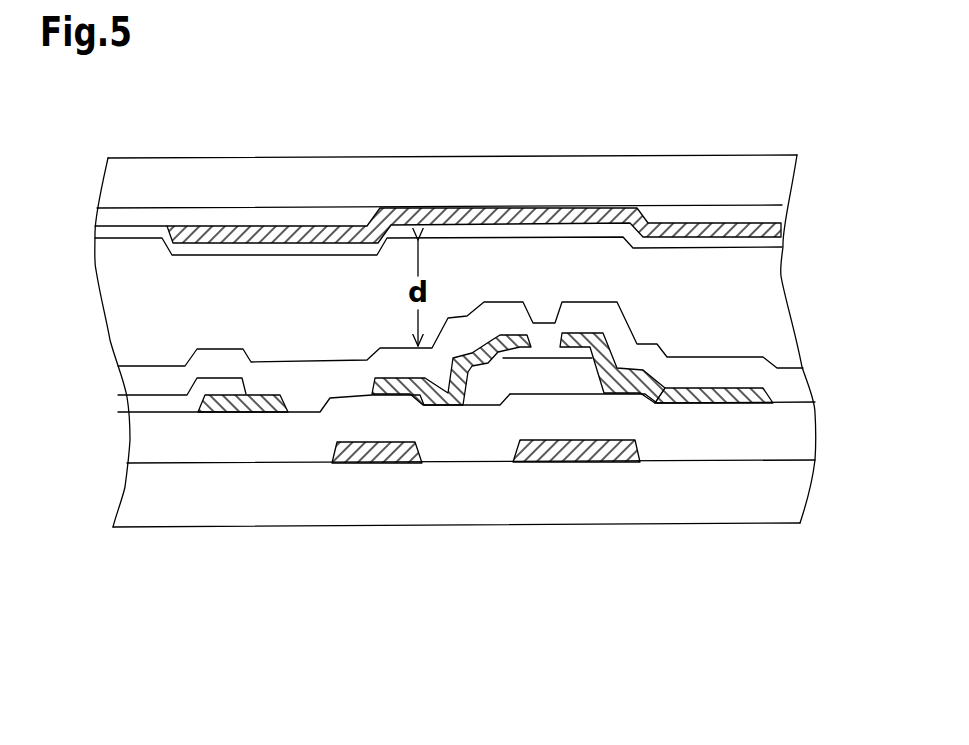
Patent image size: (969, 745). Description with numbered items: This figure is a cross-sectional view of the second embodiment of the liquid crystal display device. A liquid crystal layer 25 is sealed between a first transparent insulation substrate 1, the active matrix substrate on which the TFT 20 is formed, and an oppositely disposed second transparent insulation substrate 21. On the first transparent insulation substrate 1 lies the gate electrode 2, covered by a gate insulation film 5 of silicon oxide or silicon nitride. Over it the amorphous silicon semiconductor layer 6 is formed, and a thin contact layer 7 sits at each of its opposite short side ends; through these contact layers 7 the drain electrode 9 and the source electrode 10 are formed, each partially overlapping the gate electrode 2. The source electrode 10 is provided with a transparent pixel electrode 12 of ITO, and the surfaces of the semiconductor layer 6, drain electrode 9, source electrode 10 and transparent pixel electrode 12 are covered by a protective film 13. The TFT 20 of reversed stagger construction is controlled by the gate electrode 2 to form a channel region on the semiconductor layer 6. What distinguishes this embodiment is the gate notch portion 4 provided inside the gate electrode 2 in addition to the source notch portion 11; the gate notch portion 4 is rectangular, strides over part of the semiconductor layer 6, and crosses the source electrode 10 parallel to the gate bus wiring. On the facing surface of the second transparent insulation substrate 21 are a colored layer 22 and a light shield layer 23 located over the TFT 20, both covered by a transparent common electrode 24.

The first transparent insulation substrate 1 is at (538, 497).
The gate electrode 2 is at (360, 465).
The gate notch portion 4 is at (453, 447).
The gate insulation film 5 is at (237, 447).
The semiconductor layer 6 is at (533, 383).
The contact layer 7 is at (570, 352).
The drain electrode 9 is at (708, 400).
The source electrode 10 is at (273, 394).
The source notch portion 11 is at (327, 378).
The transparent pixel electrode 12 is at (147, 408).
The protective film 13 is at (788, 387).
The TFT 20 is at (503, 300).
The second transparent insulation substrate 21 is at (500, 183).
The colored layer 22 is at (247, 220).
The light shield layer 23 is at (570, 217).
The transparent common electrode 24 is at (150, 232).
The liquid crystal layer 25 is at (748, 313).